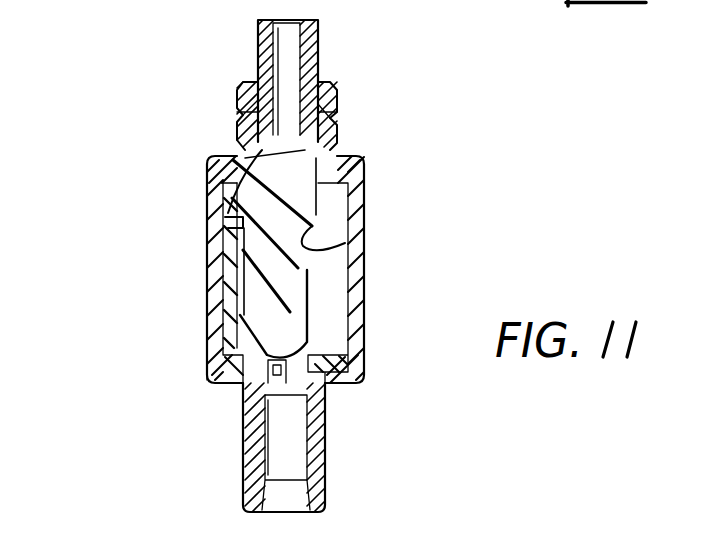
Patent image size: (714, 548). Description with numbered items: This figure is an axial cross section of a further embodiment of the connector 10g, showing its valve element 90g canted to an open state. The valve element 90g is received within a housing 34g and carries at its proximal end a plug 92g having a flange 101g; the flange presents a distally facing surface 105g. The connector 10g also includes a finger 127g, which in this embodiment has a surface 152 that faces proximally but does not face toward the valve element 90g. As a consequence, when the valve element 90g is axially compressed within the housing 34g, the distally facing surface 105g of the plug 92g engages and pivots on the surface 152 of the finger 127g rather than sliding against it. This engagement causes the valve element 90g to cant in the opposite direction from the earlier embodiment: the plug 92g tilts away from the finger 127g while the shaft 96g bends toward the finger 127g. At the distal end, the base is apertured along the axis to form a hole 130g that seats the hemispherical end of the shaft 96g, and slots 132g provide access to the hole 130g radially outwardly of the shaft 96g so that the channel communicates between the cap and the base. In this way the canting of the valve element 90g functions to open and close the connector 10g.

The connector 10g is at (358, 91).
The plug 92g is at (240, 157).
The surface 152 is at (233, 215).
The finger 127g is at (237, 245).
The housing 34g is at (195, 304).
The hole 130g is at (247, 397).
The flange 101g is at (308, 213).
The distal surface 105g is at (335, 232).
The valve element 90g is at (272, 268).
The shaft 96g is at (275, 333).
The slots 132g is at (323, 386).